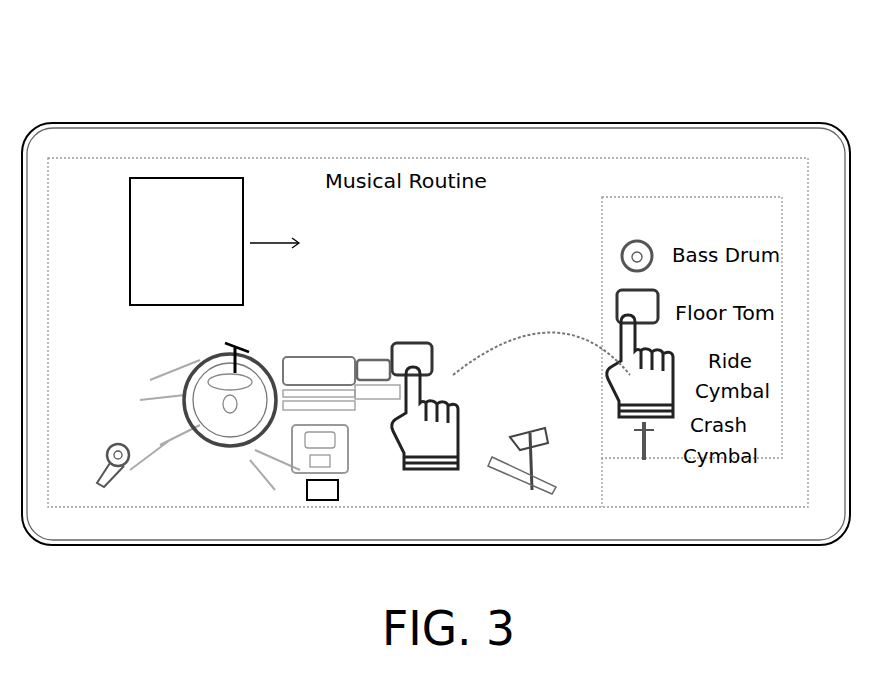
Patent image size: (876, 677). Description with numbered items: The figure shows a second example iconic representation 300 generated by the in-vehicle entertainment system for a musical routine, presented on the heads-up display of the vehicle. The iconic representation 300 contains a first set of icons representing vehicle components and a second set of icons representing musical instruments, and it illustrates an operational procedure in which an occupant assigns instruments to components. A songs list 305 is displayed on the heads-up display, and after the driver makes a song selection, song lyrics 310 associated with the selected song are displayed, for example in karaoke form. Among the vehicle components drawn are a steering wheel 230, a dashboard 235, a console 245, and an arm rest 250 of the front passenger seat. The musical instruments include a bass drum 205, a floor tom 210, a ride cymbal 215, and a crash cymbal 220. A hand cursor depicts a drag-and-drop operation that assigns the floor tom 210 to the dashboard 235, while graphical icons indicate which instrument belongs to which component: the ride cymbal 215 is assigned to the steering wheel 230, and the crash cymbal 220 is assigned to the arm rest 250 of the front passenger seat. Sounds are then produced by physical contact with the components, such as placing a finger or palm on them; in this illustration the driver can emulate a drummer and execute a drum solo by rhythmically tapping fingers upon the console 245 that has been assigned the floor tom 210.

The iconic representation 300 is at (538, 145).
The songs list 305 is at (124, 258).
The song lyrics 310 is at (428, 244).
The bass drum 205 is at (614, 246).
The floor tom 210 is at (614, 295).
The ride cymbal 215 is at (251, 344).
The crash cymbal 220 is at (540, 436).
The steering wheel 230 is at (198, 367).
The dashboard 235 is at (383, 357).
The console 245 is at (357, 492).
The arm rest of front passenger seat 250 is at (510, 469).